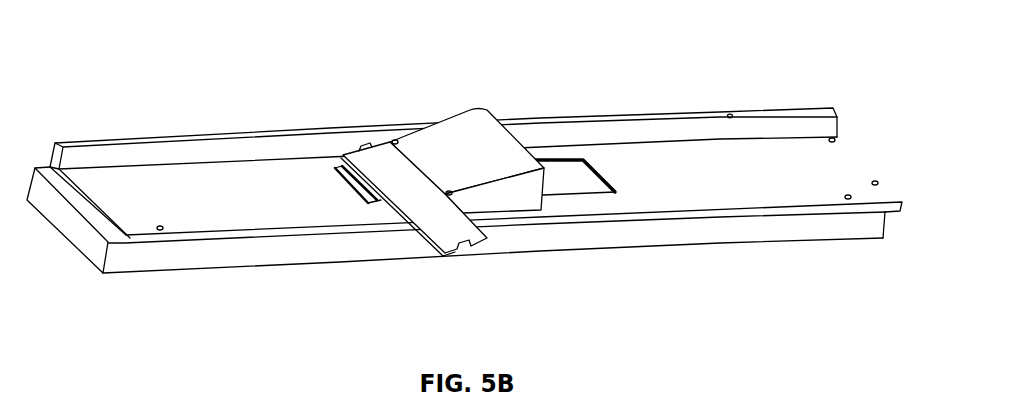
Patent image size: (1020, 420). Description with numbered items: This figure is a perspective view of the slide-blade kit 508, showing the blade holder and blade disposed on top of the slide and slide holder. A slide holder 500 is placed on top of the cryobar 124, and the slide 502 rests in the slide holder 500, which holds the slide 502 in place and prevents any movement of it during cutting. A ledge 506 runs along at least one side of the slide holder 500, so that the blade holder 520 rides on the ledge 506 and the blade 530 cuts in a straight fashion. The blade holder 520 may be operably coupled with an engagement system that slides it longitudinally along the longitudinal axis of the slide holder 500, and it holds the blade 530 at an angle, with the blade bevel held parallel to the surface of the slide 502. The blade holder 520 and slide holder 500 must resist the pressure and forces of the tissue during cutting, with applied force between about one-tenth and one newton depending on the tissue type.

The cryobar 124 is at (228, 253).
The slide holder 500 is at (198, 190).
The slide 502 is at (563, 178).
The ledge 506 is at (760, 125).
The slide-blade kit 508 is at (464, 179).
The blade holder 520 is at (465, 112).
The blade 530 is at (467, 231).